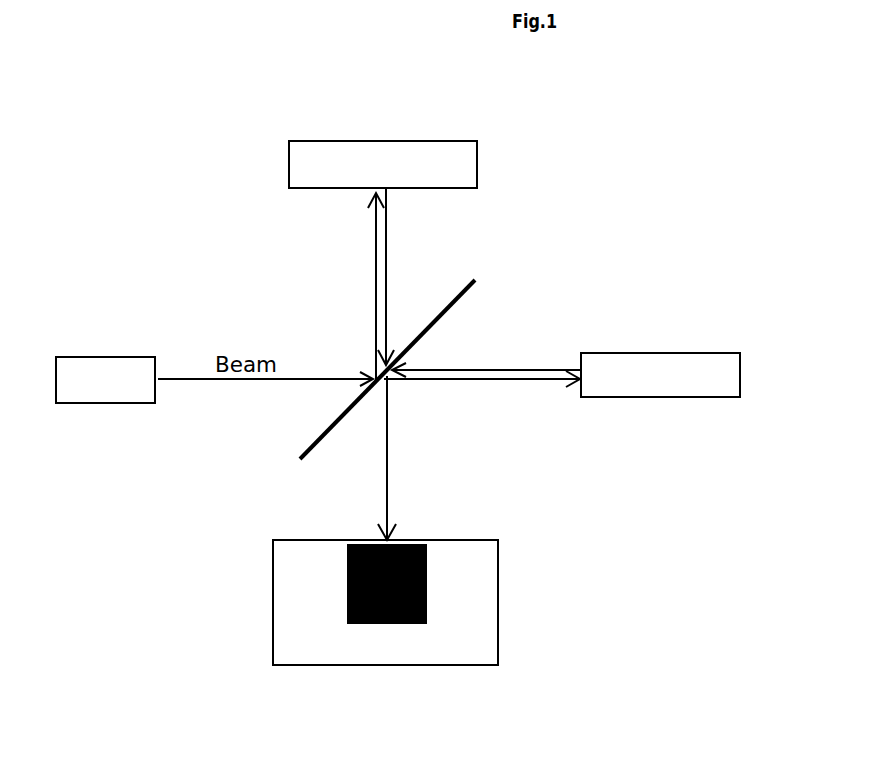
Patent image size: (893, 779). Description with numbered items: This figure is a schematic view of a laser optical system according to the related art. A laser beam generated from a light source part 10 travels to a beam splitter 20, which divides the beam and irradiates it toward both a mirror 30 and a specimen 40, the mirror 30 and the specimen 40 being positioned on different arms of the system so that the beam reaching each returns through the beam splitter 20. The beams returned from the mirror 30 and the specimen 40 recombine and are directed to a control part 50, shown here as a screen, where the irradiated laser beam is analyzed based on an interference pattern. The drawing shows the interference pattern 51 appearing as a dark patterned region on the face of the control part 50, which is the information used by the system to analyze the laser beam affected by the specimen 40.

The light source part 10 is at (105, 357).
The beam splitter 20 is at (313, 435).
The mirror 30 is at (660, 353).
The specimen 40 is at (383, 141).
The control part 50 is at (498, 603).
The interference pattern on screen 51 is at (403, 540).